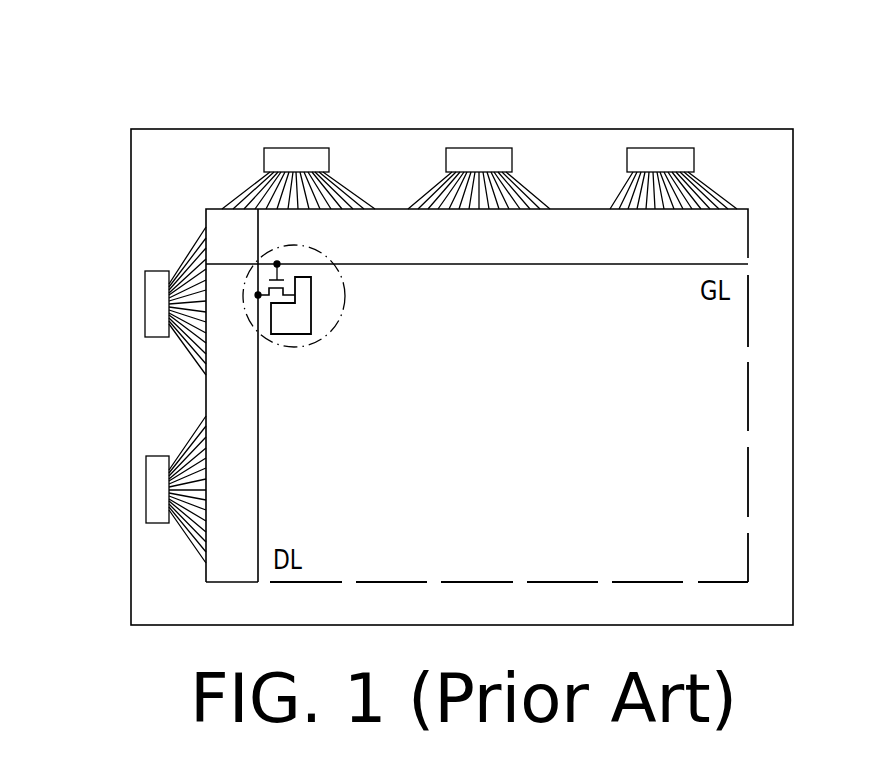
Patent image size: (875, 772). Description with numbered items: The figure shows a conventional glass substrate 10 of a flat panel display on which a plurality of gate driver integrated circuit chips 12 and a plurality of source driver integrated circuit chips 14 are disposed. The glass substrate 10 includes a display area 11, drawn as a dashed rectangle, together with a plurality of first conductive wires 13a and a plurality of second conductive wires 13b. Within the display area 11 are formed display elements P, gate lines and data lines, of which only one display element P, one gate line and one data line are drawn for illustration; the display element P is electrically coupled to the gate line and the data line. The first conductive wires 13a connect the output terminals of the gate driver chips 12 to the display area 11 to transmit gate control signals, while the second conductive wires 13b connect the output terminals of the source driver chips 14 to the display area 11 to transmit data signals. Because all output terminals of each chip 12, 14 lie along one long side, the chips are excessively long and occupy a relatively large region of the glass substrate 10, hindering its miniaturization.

The glass substrate 10 is at (501, 42).
The display area 11 is at (748, 397).
The gate driver integrated circuit chip 12 is at (145, 303).
The first conductive wire 13a is at (191, 251).
The second conductive wire 13b is at (242, 195).
The source driver integrated circuit chip 14 is at (297, 148).
The display element P is at (347, 320).